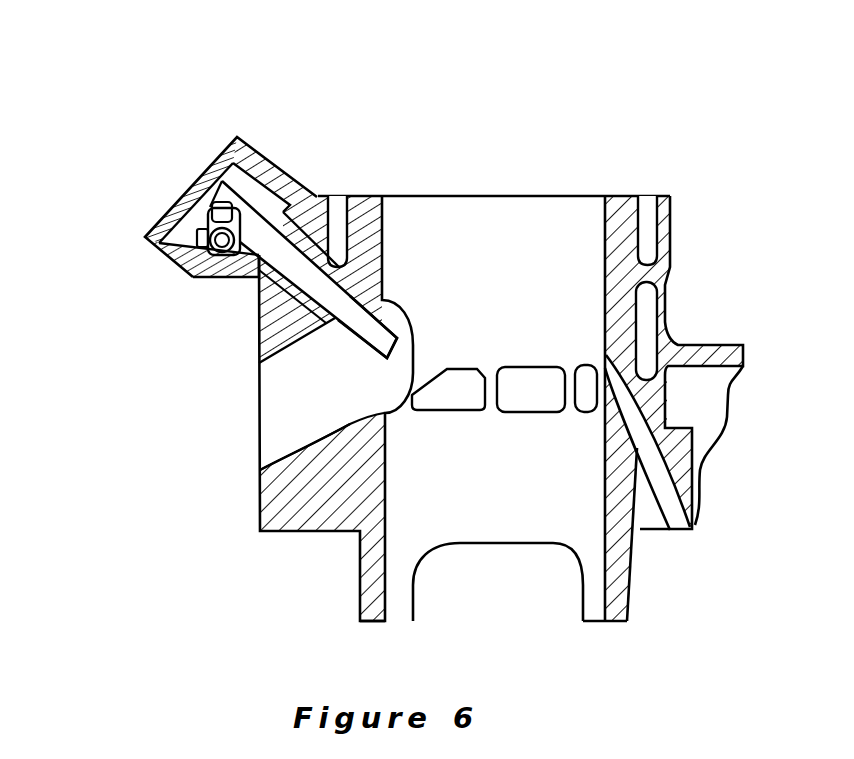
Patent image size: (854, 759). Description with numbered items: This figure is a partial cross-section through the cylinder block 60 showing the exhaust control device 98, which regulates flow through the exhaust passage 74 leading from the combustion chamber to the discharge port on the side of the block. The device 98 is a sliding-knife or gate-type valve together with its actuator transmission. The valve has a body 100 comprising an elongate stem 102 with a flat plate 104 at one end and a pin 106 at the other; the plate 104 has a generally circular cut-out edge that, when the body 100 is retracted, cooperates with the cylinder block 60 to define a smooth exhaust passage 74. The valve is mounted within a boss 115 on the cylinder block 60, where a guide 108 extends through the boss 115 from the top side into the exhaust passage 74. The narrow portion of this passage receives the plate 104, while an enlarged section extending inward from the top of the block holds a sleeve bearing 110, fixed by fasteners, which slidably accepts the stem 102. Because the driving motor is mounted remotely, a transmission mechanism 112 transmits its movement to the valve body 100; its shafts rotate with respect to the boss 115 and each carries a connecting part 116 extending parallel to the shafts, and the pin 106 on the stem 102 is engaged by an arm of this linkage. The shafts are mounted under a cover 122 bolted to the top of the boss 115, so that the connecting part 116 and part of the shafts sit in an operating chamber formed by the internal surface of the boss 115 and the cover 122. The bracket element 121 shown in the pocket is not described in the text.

The exhaust control device 98 is at (280, 216).
The pin 106 is at (212, 162).
The connecting part 116 is at (191, 187).
The cover 122 is at (163, 210).
The mounting bracket 121 is at (177, 273).
The transmission mechanism 112 is at (263, 208).
The valve body 100 is at (340, 197).
The cylinder block 60 is at (384, 237).
The sleeve bearing 110 is at (353, 280).
The guide 108 is at (257, 293).
The stem 102 is at (258, 360).
The plate 104 is at (363, 340).
The exhaust passage 74 is at (273, 445).
The boss 115 is at (297, 537).